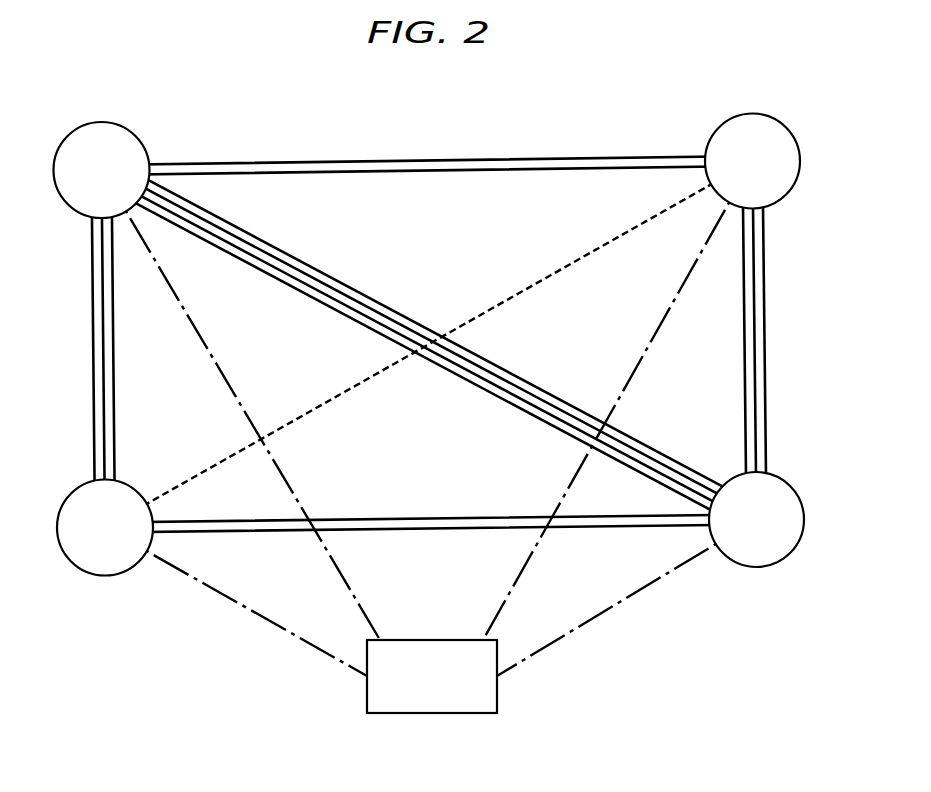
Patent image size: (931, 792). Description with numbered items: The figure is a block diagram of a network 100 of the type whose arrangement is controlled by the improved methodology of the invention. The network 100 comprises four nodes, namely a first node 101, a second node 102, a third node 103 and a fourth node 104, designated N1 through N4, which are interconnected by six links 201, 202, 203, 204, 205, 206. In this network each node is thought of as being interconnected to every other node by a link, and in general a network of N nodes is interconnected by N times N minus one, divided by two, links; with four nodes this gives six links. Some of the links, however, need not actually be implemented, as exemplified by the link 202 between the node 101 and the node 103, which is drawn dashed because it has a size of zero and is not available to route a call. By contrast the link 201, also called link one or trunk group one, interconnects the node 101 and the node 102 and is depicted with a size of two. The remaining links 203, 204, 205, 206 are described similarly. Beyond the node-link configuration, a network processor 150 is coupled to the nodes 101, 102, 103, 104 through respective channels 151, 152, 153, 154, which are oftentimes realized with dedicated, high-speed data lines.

The network 100 is at (445, 96).
The node 101 is at (112, 573).
The node 102 is at (735, 565).
The node 103 is at (788, 132).
The node 104 is at (138, 138).
The network processor 150 is at (430, 714).
The channel 151 is at (283, 627).
The channel 152 is at (627, 599).
The channel 153 is at (503, 593).
The channel 154 is at (356, 593).
The link 201 is at (480, 532).
The link 202 is at (566, 271).
The link 203 is at (90, 346).
The link 204 is at (740, 340).
The link 205 is at (328, 314).
The link 206 is at (528, 180).